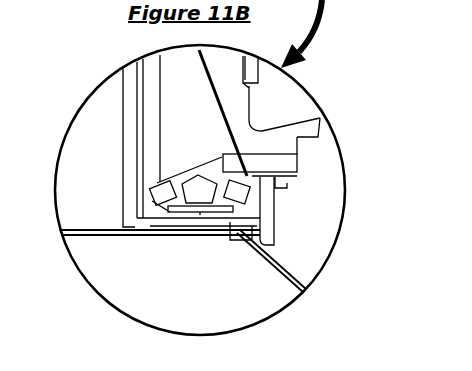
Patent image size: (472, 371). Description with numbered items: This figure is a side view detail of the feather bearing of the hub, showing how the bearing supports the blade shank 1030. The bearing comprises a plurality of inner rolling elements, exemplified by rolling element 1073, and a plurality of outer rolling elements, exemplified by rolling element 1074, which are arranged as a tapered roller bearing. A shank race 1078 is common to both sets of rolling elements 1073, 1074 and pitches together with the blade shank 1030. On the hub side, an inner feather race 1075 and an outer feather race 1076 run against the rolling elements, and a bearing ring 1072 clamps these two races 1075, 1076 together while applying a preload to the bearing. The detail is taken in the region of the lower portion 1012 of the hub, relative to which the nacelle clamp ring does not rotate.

The lower portion 1012 is at (280, 258).
The blade shank 1030 is at (333, 145).
The bearing ring 1072 is at (275, 215).
The inner rolling element 1073 is at (173, 234).
The outer rolling element 1074 is at (237, 240).
The inner feather race 1075 is at (150, 240).
The outer feather race 1076 is at (152, 190).
The shank race 1078 is at (192, 168).